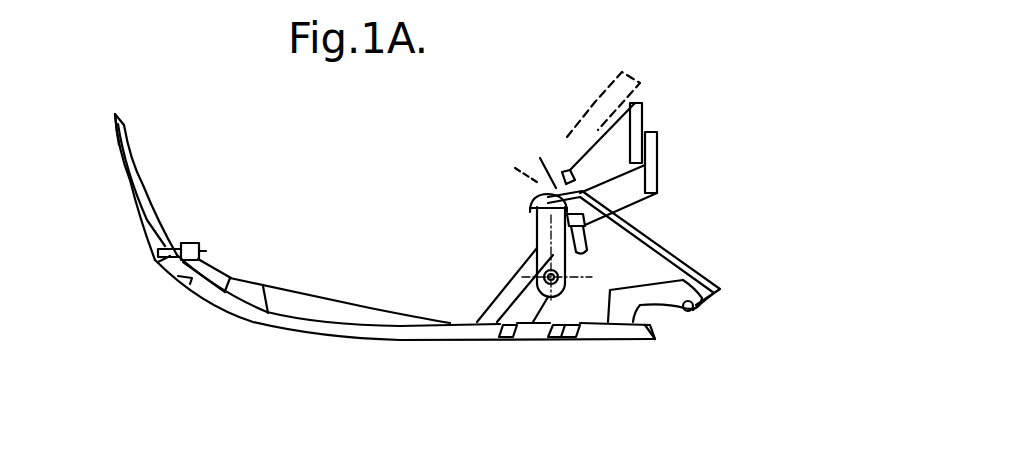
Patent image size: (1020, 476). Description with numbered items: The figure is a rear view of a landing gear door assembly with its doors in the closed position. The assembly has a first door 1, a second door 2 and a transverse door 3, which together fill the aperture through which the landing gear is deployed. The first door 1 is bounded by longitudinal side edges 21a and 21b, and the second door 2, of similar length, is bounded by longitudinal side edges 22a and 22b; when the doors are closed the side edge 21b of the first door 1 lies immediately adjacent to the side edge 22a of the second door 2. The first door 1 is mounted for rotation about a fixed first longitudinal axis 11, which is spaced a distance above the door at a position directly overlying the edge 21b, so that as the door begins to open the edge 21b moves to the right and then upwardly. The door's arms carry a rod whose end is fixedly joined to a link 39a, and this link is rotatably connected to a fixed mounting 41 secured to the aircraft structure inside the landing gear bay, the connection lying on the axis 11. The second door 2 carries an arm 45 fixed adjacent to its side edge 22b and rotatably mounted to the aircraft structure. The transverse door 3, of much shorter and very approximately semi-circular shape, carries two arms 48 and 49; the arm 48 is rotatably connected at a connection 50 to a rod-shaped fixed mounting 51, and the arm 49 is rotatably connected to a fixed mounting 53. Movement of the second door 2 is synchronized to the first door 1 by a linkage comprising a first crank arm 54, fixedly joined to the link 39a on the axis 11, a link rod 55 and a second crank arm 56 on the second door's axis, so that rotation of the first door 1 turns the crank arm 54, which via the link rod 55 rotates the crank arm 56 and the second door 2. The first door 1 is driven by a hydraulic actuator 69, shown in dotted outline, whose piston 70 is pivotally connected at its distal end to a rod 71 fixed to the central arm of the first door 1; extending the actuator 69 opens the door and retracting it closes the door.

The first door 1 is at (123, 122).
The longitudinal side edge 21a is at (116, 112).
The transverse door 3 is at (275, 328).
The connection 50 is at (188, 242).
The rod-shaped fixed mounting 51 is at (160, 262).
The arm 48 is at (213, 275).
The arm 49 is at (492, 312).
The longitudinal side edge 21b is at (540, 345).
The longitudinal side edge 22a is at (550, 345).
The second door 2 is at (610, 337).
The longitudinal side edge 22b is at (662, 335).
The arm 45 is at (617, 303).
The second crank arm 56 is at (705, 292).
The link rod 55 is at (678, 262).
The first longitudinal axis 11 is at (547, 202).
The link 39a is at (543, 242).
The fixed mounting 41 is at (640, 102).
The fixed mounting 53 is at (653, 170).
The first crank arm 54 is at (568, 170).
The piston 70 is at (552, 178).
The rod 71 is at (508, 162).
The hydraulic actuator 69 is at (593, 100).